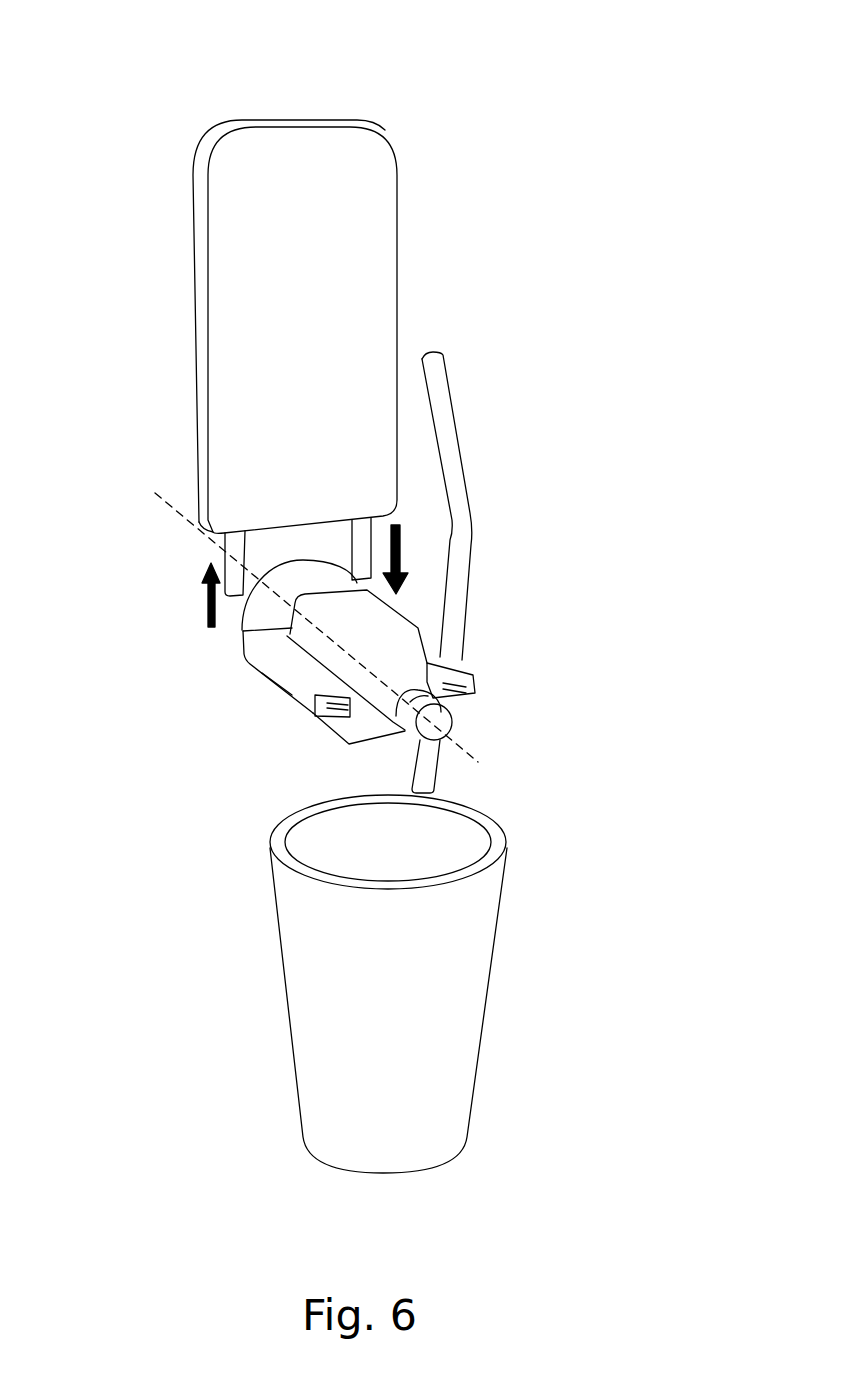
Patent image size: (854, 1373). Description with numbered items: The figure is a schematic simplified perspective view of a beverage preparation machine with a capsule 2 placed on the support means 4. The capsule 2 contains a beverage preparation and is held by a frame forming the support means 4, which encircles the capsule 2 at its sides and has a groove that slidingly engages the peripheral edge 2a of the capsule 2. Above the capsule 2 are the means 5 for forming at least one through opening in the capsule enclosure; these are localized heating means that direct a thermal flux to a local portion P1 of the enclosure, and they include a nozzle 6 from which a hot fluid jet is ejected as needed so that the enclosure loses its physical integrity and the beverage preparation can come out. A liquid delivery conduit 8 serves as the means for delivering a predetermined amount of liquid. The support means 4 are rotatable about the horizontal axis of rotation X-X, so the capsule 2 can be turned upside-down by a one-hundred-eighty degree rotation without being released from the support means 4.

The capsule 2 is at (408, 641).
The peripheral edge 2a is at (357, 723).
The capsule support means 4 is at (263, 655).
The means for forming at least one opening 5 is at (347, 266).
The nozzle 6 is at (397, 523).
The liquid delivery conduit 8 is at (460, 519).
The local portion P1 is at (367, 614).
The axis of rotation X-X is at (472, 760).